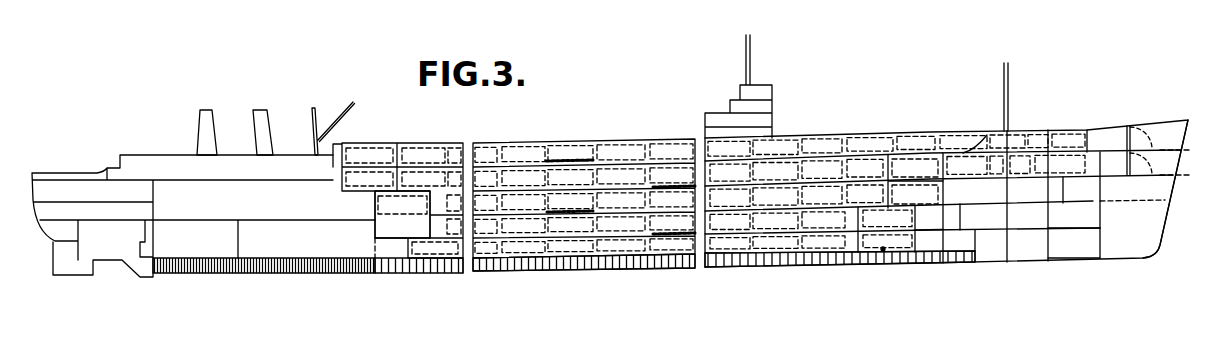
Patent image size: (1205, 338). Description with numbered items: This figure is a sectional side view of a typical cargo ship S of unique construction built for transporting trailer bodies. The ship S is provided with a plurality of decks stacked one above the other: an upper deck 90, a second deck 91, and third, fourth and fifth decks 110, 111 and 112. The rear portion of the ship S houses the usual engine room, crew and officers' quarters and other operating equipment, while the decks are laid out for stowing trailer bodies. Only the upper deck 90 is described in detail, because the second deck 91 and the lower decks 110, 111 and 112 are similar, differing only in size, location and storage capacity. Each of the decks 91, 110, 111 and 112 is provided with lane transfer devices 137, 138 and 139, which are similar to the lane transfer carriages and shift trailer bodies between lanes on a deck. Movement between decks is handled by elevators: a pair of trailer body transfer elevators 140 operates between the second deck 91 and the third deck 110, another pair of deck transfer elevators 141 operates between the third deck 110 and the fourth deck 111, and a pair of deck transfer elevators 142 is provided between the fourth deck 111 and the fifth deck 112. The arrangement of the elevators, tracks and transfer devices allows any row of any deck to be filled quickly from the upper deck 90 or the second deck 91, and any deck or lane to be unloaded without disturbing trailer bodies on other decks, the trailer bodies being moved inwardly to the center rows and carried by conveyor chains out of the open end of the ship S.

The ship S is at (587, 138).
The upper deck 90 is at (867, 157).
The second deck 91 is at (822, 182).
The third deck 110 is at (1093, 205).
The fourth deck 111 is at (1072, 229).
The fifth deck 112 is at (883, 249).
The lane transfer device 137 is at (670, 186).
The lane transfer device 138 is at (572, 213).
The lane transfer device 139 is at (678, 235).
The trailer body transfer elevator 140 is at (920, 185).
The deck transfer elevator 141 is at (377, 232).
The deck transfer elevator 142 is at (917, 232).